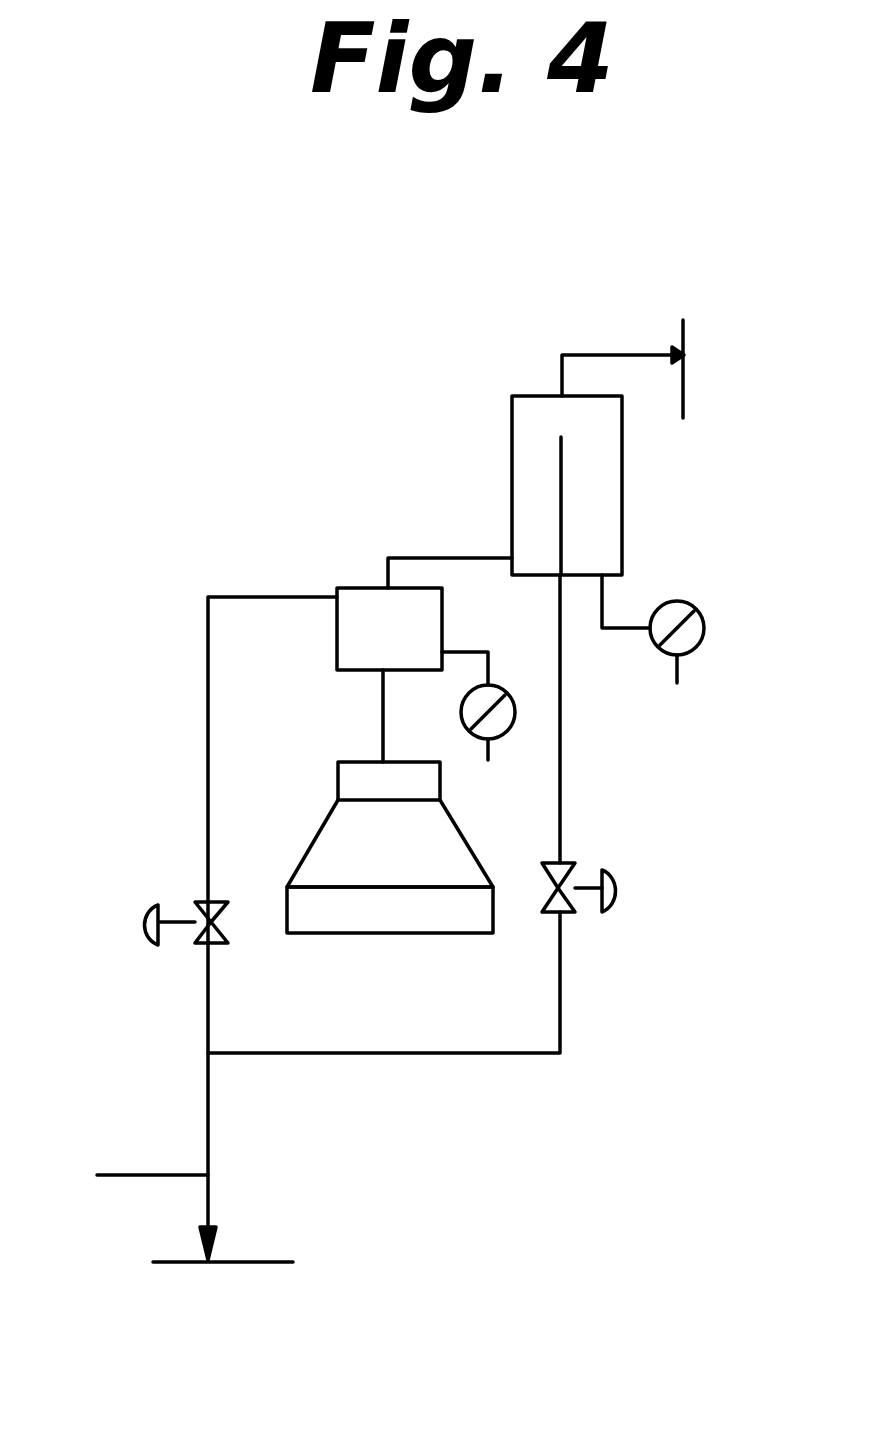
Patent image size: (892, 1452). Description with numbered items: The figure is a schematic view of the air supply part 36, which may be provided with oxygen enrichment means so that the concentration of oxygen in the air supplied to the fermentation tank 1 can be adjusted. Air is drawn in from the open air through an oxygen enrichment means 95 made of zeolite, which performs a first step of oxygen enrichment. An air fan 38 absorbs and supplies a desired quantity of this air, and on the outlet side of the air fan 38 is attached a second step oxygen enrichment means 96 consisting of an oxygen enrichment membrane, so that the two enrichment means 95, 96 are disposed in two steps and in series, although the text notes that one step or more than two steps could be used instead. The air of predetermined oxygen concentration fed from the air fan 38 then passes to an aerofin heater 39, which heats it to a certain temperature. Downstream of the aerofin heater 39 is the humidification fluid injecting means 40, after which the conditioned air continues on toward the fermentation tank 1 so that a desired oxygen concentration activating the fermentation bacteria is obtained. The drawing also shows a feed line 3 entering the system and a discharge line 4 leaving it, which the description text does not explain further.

The fermentation tank 1 is at (719, 361).
The feed line 3 is at (130, 1175).
The product line 4 is at (246, 1264).
The air supply part 36 is at (314, 566).
The air fan 38 is at (332, 858).
The aerofin heater 39 is at (363, 615).
The humidification fluid injecting means 40 is at (492, 456).
The oxygen enrichment means 95 is at (310, 912).
The second step oxygen enrichment means 96 is at (356, 760).